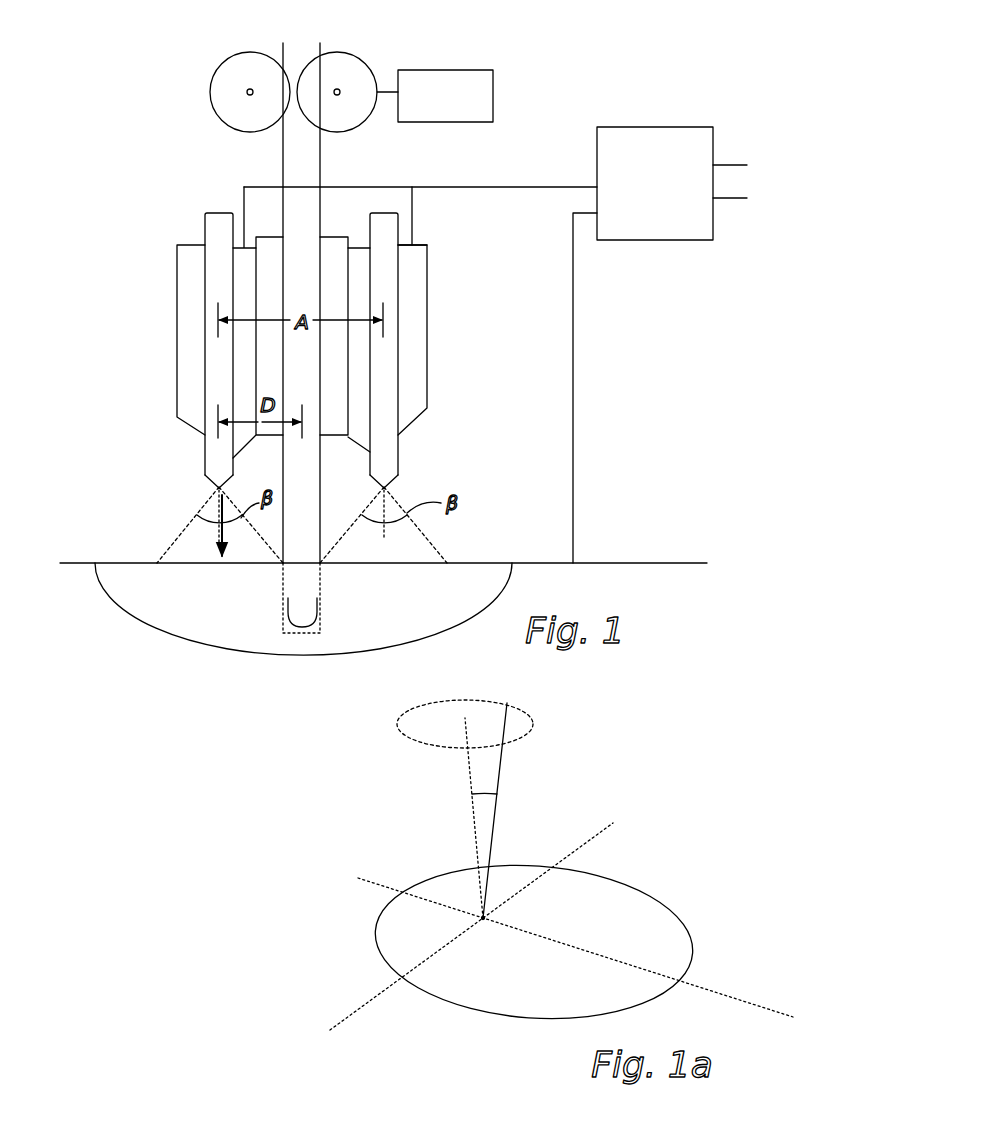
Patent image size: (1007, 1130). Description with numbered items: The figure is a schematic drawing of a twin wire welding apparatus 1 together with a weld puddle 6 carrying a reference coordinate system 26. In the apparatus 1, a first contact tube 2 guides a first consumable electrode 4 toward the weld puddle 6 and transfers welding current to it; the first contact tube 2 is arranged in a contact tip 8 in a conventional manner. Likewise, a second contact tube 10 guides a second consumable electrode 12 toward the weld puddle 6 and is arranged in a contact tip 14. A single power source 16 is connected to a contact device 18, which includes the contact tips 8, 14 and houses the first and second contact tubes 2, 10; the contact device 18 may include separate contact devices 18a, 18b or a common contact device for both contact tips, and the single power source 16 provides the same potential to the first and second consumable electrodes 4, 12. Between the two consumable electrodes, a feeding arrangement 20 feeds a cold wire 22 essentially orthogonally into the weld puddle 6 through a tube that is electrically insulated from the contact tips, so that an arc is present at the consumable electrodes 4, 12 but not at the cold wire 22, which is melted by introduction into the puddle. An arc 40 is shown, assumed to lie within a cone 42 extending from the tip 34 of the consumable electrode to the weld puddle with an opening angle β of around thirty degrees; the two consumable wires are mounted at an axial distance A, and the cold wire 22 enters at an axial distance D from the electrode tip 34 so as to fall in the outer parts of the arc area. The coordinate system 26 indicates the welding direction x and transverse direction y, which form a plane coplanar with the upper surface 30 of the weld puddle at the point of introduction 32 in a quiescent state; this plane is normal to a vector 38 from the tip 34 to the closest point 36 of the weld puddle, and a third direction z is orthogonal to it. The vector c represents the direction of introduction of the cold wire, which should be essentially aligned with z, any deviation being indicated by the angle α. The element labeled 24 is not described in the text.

In FIG. 1, the twin wire welding apparatus 1 is at (140, 181).
In FIG. 1, the first contact tube 2 is at (200, 407).
In FIG. 1, the first consumable electrode 4 is at (212, 230).
In FIG. 1, the weld puddle 6 is at (195, 615).
In FIG. 1A, the weld puddle 6 is at (637, 923).
In FIG. 1, the contact tip 8 is at (183, 325).
In FIG. 1, the second contact tube 10 is at (398, 352).
In FIG. 1, the second consumable electrode 12 is at (427, 287).
In FIG. 1, the contact tip 14 is at (413, 393).
In FIG. 1, the single power source 16 is at (658, 218).
In FIG. 1, the contact device 18 is at (441, 227).
In FIG. 1, the separate contact device 18a is at (244, 246).
In FIG. 1, the separate contact device 18b is at (430, 235).
In FIG. 1, the feeding arrangement 20 is at (207, 78).
In FIG. 1, the cold wire 22 is at (312, 222).
In FIG. 1, the second electrode holder 24 is at (347, 423).
In FIG. 1A, the reference coordinate system 26 is at (607, 757).
In FIG. 1, the upper surface 30 is at (503, 572).
In FIG. 1A, the point of introduction 32 is at (480, 920).
In FIG. 1, the tip 34 is at (215, 488).
In FIG. 1, the closest point 36 is at (220, 573).
In FIG. 1, the vector 38 is at (222, 540).
In FIG. 1, the arc 40 is at (218, 503).
In FIG. 1, the cone 42 is at (155, 553).